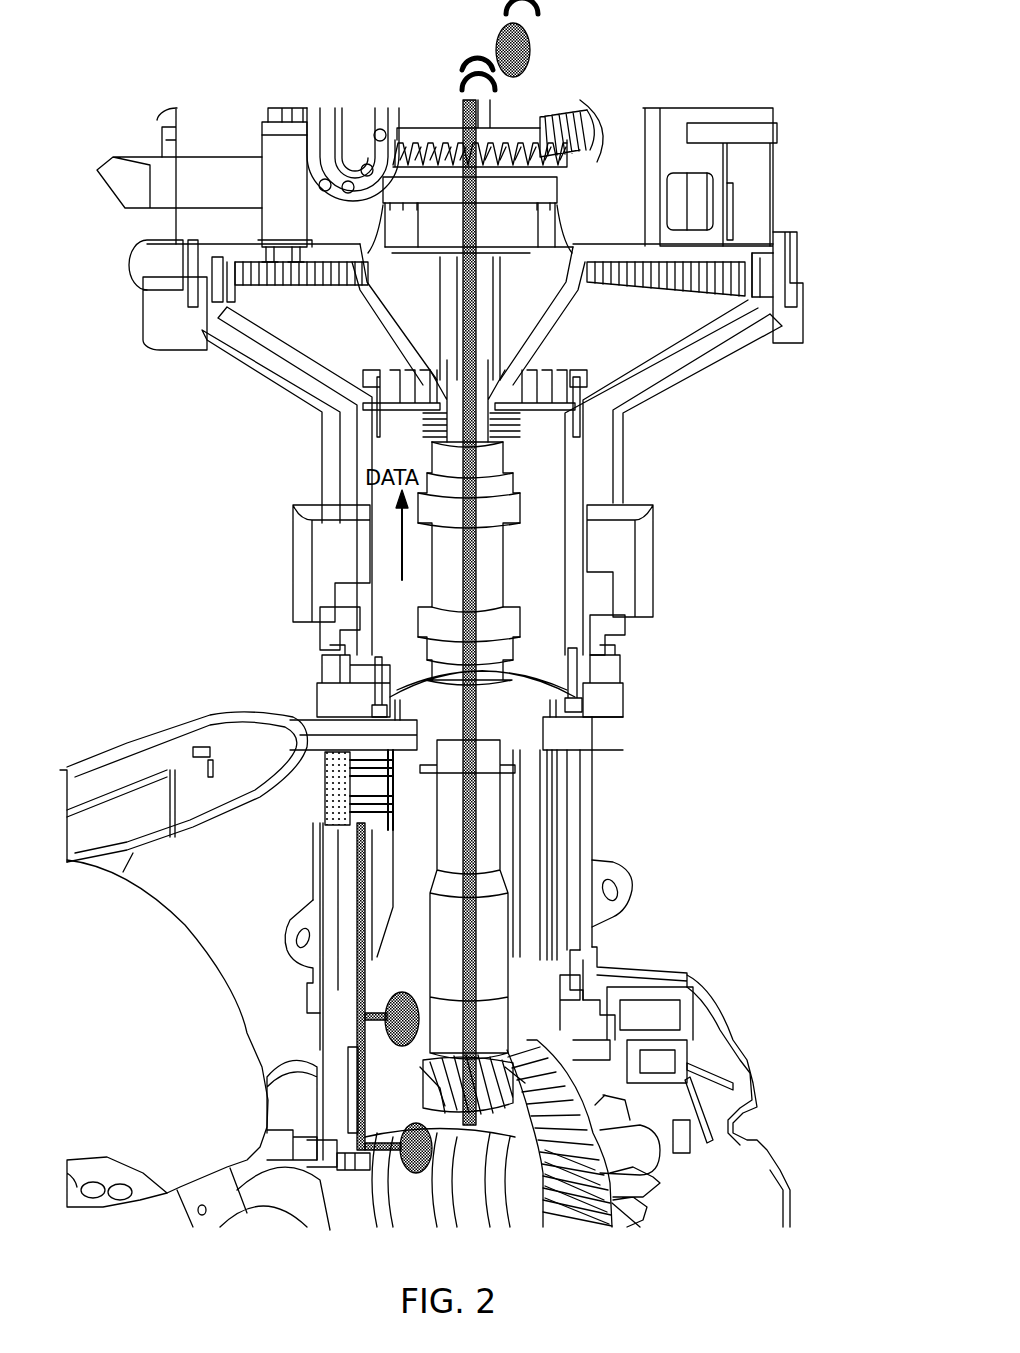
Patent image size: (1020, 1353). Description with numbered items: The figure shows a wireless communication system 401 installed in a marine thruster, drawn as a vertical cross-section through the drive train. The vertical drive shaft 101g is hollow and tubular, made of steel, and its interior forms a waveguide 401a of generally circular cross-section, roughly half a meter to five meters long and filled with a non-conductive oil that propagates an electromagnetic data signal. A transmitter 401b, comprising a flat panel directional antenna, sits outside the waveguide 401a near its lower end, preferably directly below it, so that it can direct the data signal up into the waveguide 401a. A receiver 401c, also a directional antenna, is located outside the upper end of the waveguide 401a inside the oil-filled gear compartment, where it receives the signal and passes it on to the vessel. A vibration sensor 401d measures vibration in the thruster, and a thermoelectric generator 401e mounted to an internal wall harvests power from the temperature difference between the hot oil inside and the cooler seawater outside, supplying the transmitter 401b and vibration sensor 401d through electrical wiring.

The wireless communication system 401 is at (273, 1237).
The waveguide 401a is at (477, 830).
The transmitter 401b is at (417, 1174).
The receiver 401c is at (531, 50).
The vibration sensor 401d is at (370, 1157).
The thermoelectric generator 401e is at (325, 790).
The vertical drive shaft 101g is at (493, 585).